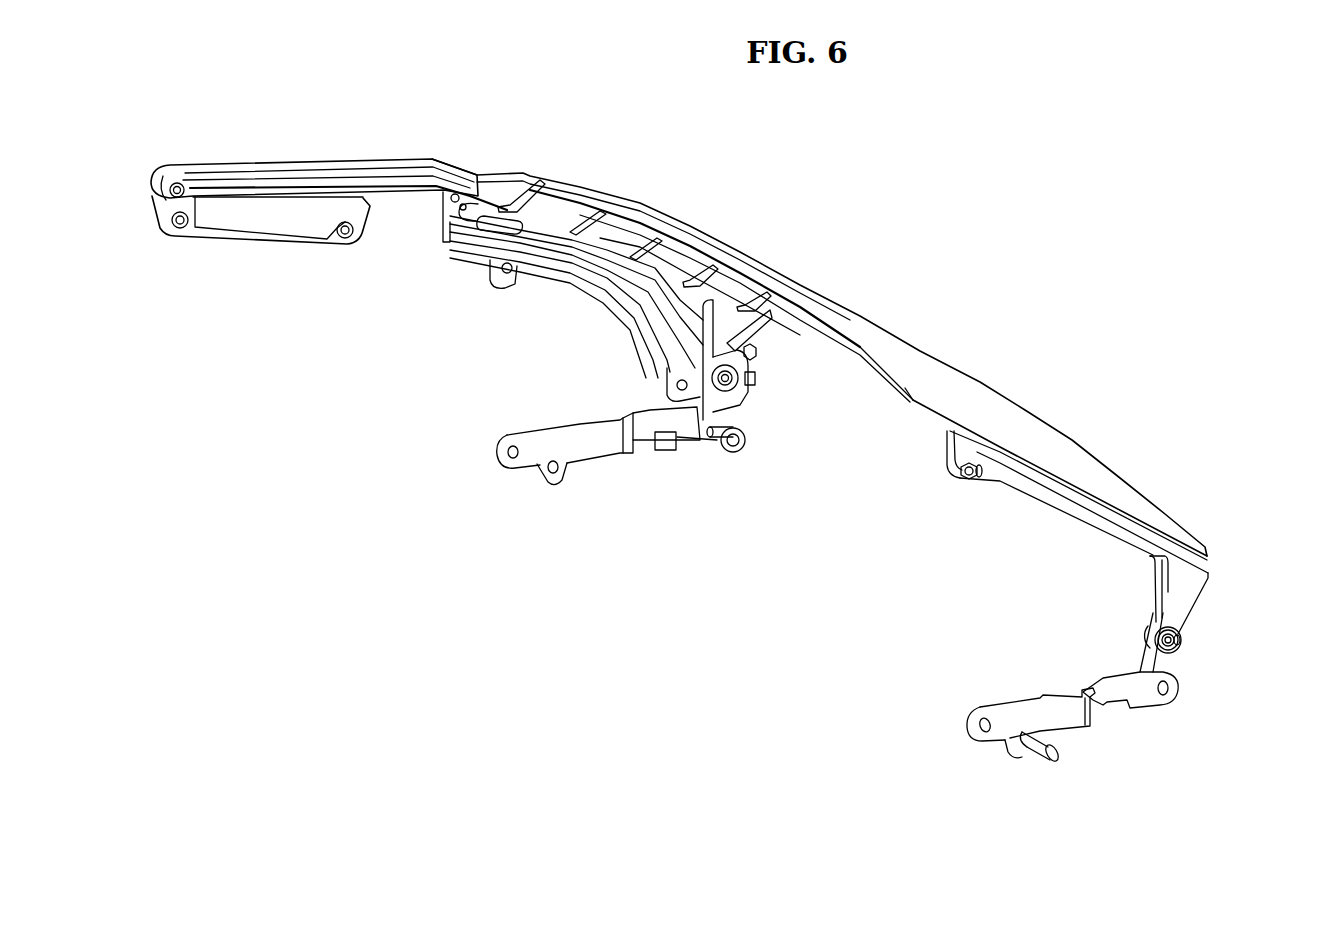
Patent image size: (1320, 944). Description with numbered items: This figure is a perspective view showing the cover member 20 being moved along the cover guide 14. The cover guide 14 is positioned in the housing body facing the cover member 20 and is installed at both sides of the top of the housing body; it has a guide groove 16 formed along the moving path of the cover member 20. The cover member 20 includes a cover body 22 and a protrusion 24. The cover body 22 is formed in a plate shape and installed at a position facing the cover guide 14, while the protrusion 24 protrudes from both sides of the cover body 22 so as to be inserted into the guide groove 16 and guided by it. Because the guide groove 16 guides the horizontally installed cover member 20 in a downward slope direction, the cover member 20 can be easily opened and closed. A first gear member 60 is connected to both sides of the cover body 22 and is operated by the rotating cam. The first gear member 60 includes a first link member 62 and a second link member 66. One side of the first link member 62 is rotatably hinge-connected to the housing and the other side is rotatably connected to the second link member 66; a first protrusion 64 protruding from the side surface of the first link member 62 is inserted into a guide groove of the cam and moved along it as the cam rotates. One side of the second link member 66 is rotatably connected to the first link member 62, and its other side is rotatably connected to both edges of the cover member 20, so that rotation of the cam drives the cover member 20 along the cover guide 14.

The cover guide 14 is at (240, 206).
The guide groove 16 is at (300, 171).
The cover member 20 is at (1010, 346).
The cover body 22 is at (893, 340).
The protrusion 24 is at (960, 482).
The first gear member 60 is at (1119, 737).
The first link member 62 is at (1073, 706).
The first protrusion 64 is at (1043, 760).
The second link member 66 is at (1163, 658).